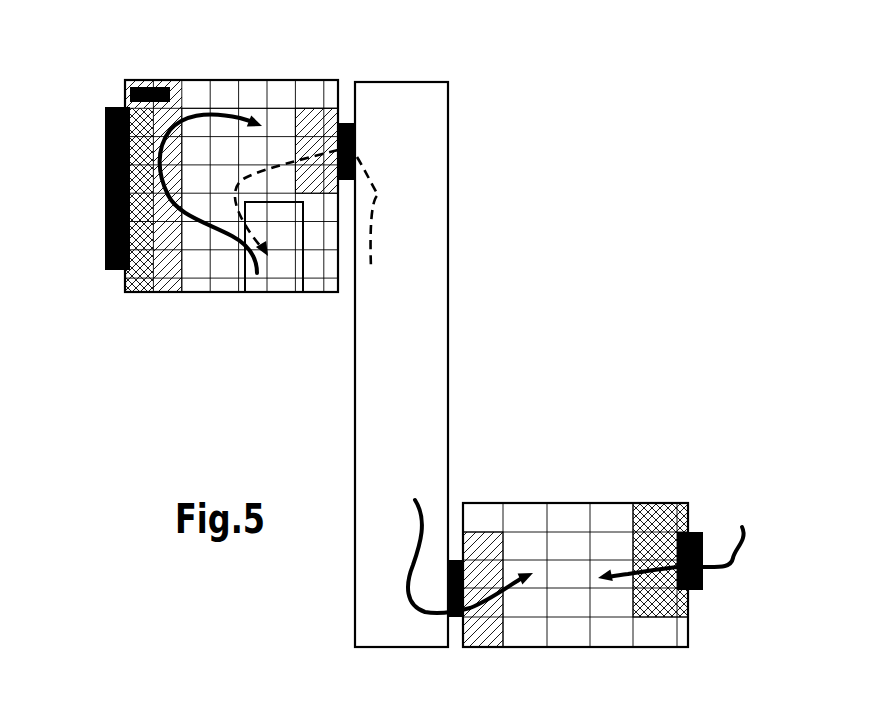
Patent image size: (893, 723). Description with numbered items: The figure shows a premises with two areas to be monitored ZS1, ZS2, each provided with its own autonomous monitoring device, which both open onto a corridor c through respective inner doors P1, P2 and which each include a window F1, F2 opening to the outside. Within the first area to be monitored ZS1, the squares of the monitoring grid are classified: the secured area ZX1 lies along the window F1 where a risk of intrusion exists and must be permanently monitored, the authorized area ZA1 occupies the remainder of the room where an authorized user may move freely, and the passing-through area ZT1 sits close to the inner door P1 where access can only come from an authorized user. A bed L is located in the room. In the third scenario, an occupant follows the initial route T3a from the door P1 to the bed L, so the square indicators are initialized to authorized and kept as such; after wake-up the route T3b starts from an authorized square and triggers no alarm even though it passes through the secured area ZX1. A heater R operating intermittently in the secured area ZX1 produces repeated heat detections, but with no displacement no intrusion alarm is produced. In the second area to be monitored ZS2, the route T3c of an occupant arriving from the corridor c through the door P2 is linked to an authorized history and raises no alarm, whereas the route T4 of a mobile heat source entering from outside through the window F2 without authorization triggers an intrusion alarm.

The heater R is at (133, 87).
The route T3b is at (197, 113).
The area to be monitored ZS1 is at (259, 80).
The passing-through area ZT1 is at (305, 113).
The inner door P1 is at (347, 121).
The route T3a is at (378, 195).
The window F1 is at (105, 232).
The secured area ZX1 is at (167, 272).
The authorized area ZA1 is at (225, 270).
The bed L is at (305, 270).
The corridor c is at (410, 402).
The area to be monitored ZS2 is at (570, 503).
The window F2 is at (698, 532).
The route T3c is at (412, 560).
The route T4 is at (733, 557).
The inner door P2 is at (457, 620).